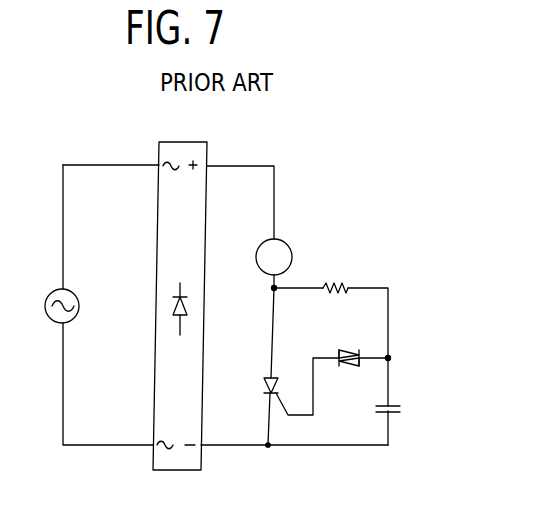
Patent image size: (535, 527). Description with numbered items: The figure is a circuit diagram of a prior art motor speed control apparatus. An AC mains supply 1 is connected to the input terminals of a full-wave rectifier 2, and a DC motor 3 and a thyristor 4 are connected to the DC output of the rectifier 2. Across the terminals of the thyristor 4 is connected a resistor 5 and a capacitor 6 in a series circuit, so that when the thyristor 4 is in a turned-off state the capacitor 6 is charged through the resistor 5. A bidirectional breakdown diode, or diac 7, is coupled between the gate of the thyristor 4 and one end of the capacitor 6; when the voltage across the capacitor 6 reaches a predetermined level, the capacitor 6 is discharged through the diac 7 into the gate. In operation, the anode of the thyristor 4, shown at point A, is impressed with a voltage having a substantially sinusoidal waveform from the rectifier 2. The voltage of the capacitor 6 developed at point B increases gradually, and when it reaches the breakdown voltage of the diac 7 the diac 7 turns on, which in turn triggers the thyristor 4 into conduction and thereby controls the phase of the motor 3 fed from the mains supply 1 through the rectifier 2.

The AC mains supply 1 is at (76, 290).
The full-wave rectifier 2 is at (203, 142).
The DC motor 3 is at (290, 247).
The thyristor 4 is at (278, 378).
The resistor 5 is at (343, 288).
The capacitor 6 is at (398, 409).
The bidirectional breakdown diode (diac) 7 is at (348, 348).
The anode of thyristor A is at (272, 290).
The capacitor voltage point B is at (391, 357).